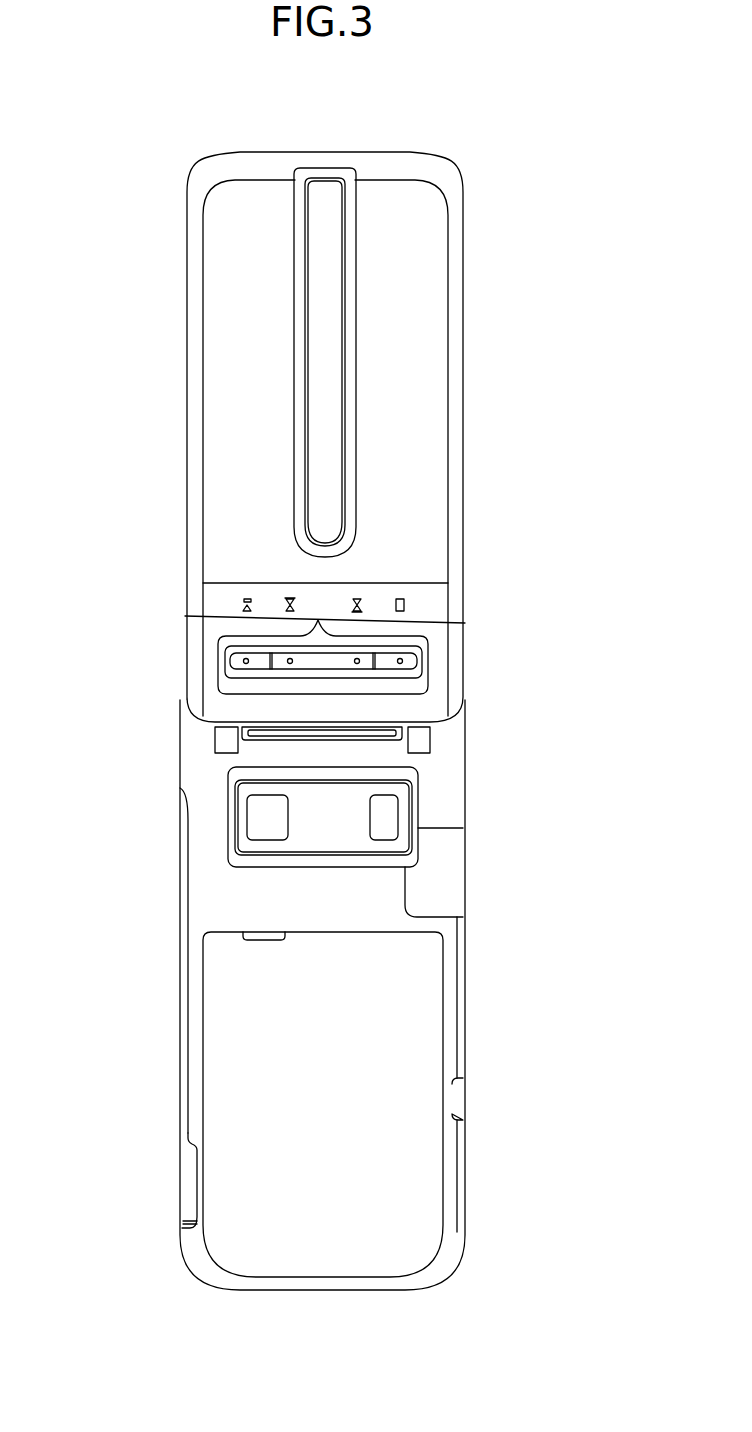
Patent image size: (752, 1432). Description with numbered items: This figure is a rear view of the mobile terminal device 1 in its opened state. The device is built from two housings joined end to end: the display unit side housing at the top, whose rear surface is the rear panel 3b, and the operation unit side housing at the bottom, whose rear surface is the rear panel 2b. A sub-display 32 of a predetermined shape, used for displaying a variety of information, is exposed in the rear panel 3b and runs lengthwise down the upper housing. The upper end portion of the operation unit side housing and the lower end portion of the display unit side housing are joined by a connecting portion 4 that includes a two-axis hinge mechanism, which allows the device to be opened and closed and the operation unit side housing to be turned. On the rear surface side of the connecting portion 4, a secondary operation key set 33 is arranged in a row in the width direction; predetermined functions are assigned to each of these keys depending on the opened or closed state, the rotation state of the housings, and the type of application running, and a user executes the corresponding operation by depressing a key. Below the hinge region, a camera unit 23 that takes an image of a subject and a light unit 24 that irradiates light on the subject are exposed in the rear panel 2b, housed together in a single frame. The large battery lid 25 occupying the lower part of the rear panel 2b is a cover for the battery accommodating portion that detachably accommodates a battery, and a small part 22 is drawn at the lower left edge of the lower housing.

The mobile terminal device 1 is at (492, 172).
The rear panel 3b is at (210, 305).
The sub-display 32 is at (318, 406).
The secondary operation key set 33 is at (320, 618).
The connecting portion 4 is at (172, 656).
The camera unit 23 is at (383, 812).
The light unit 24 is at (262, 815).
The rear panel 2b is at (220, 895).
The lock lever 22 is at (190, 1178).
The battery lid 25 is at (403, 1168).